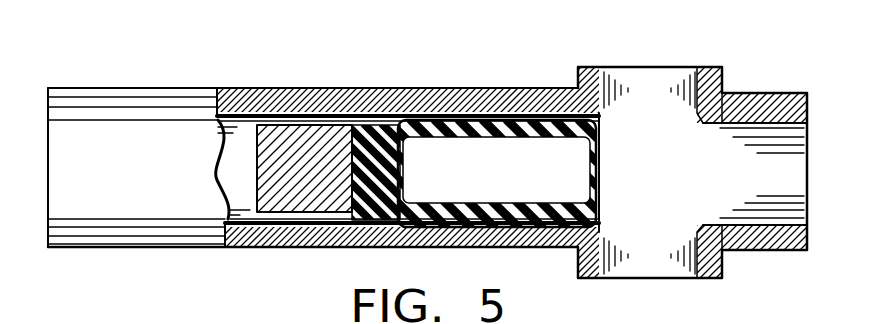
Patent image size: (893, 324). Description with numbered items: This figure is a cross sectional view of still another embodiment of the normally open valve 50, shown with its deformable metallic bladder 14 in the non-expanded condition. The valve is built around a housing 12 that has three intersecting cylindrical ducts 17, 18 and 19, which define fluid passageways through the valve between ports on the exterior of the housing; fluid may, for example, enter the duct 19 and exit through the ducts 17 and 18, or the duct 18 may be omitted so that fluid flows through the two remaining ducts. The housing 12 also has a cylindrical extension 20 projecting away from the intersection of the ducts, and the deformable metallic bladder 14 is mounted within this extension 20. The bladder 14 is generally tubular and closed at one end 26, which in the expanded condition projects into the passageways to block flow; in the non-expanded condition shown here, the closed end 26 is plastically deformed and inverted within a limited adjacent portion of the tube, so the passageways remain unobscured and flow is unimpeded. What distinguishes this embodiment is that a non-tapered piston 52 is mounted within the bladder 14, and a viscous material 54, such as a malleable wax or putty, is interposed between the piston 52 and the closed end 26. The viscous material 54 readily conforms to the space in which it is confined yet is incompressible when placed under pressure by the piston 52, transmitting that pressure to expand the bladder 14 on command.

The normally open valve 50 is at (283, 40).
The housing 12 is at (377, 91).
The deformable metallic bladder 14 is at (304, 106).
The cylindrical extension 20 is at (494, 88).
The cylindrical duct 17 is at (723, 80).
The cylindrical duct 18 is at (722, 264).
The cylindrical duct 19 is at (763, 95).
The non-tapered piston 52 is at (268, 171).
The viscous material 54 is at (393, 126).
The closed end 26 is at (433, 200).